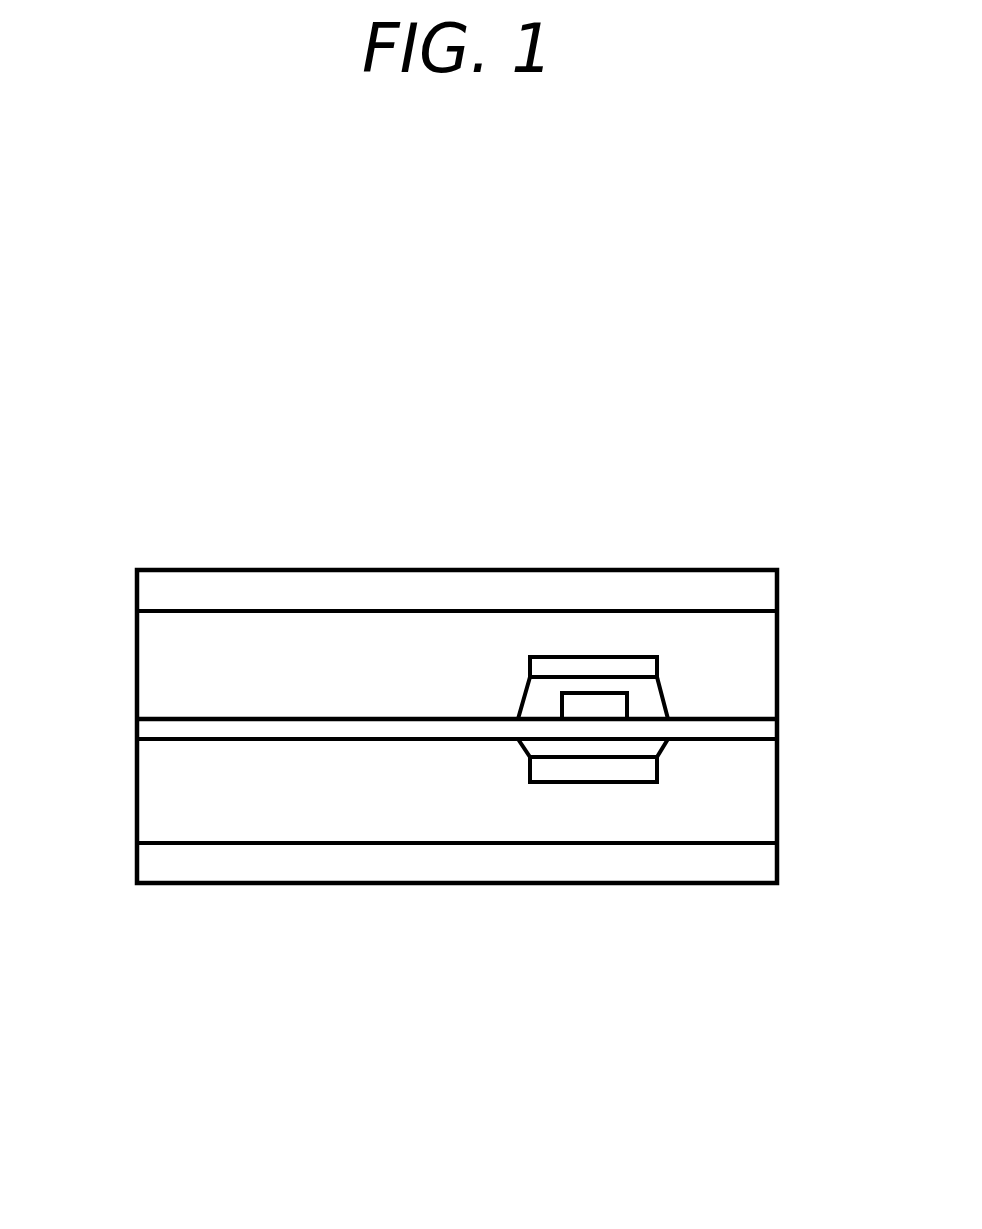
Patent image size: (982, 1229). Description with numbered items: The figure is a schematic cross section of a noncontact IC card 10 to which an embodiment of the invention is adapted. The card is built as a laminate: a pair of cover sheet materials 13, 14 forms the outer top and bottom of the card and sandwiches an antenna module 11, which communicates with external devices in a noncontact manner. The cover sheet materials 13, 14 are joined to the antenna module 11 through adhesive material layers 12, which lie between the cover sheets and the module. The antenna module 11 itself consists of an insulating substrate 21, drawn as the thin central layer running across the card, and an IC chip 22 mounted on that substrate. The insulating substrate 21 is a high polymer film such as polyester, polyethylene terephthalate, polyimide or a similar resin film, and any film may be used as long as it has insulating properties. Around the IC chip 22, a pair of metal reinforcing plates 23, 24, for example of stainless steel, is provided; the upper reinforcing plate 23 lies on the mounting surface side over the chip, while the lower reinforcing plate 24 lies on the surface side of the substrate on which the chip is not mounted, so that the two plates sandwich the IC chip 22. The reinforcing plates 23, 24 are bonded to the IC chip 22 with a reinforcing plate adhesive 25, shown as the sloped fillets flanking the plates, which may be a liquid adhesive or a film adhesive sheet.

The noncontact IC card 10 is at (628, 1066).
The antenna module 11 is at (366, 719).
The adhesive material layers 12 is at (174, 686).
The cover sheet material 13 is at (501, 583).
The cover sheet material 14 is at (662, 855).
The insulating substrate 21 is at (417, 740).
The IC chip 22 is at (628, 706).
The reinforcing plate 23 is at (640, 665).
The reinforcing plate 24 is at (554, 765).
The reinforcing plate adhesive 25 is at (655, 708).